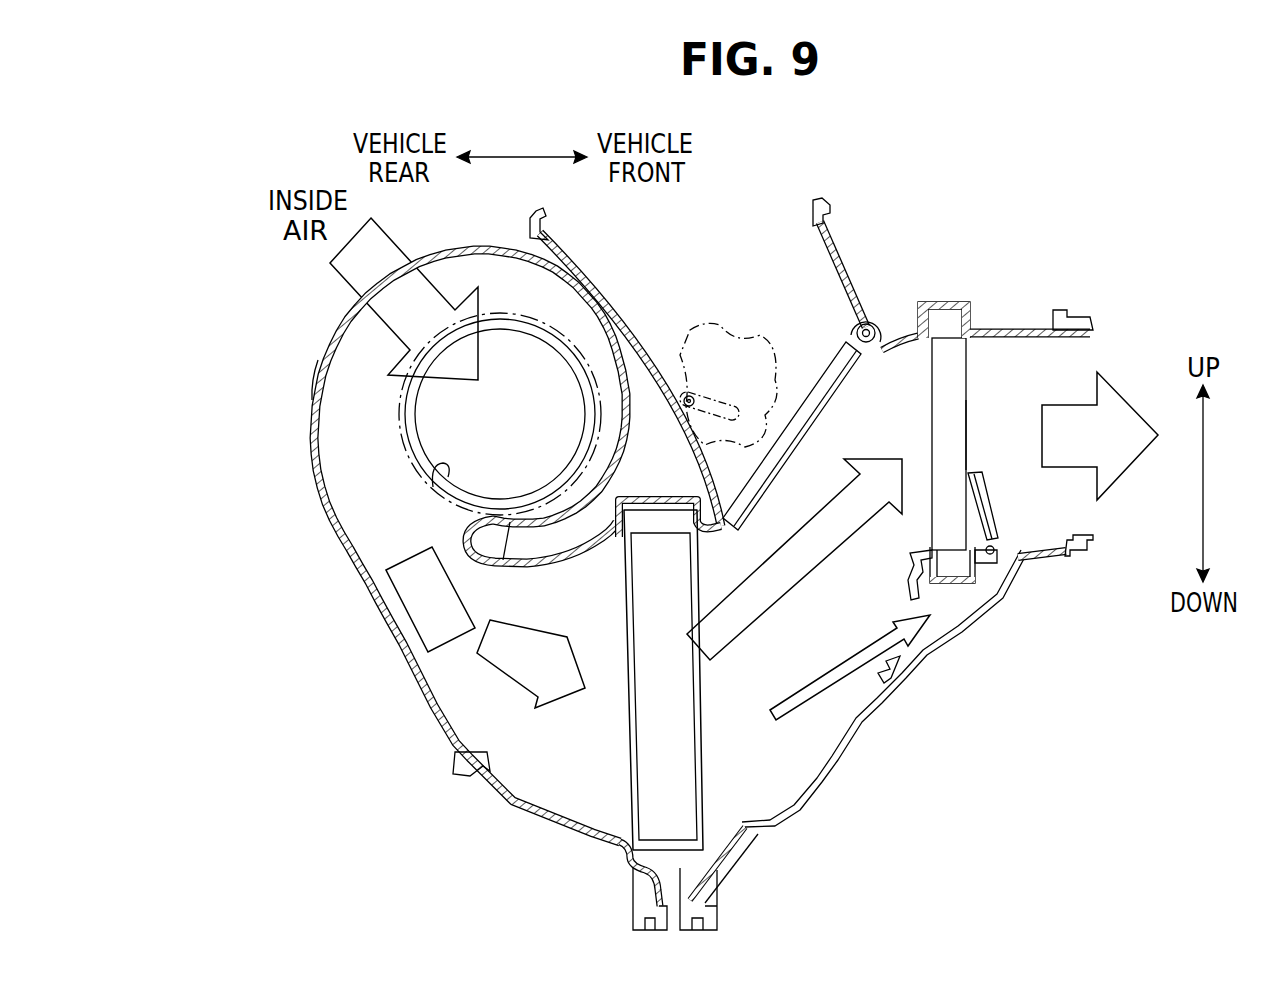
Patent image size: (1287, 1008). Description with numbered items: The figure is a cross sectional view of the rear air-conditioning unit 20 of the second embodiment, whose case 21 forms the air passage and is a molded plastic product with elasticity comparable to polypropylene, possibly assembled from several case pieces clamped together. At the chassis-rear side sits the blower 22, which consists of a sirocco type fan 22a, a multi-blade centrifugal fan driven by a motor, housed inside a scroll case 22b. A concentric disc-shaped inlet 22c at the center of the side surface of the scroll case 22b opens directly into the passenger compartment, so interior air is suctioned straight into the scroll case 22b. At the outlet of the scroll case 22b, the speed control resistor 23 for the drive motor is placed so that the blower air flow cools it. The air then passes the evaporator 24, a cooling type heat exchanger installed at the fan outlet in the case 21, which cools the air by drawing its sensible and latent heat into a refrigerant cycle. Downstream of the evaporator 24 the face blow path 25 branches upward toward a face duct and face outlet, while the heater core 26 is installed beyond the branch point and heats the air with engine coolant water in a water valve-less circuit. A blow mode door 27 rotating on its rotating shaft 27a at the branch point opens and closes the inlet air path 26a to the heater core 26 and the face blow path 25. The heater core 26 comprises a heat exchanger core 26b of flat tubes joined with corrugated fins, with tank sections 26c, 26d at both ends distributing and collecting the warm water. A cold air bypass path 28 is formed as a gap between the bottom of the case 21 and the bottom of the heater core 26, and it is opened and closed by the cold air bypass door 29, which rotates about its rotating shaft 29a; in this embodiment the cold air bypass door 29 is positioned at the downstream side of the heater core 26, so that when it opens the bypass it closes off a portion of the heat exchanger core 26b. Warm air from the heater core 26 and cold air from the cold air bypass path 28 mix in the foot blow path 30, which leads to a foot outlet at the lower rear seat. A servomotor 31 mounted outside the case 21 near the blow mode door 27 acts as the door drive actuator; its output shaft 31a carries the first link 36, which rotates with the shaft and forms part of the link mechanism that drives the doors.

The rear air-conditioning unit 20 is at (820, 790).
The case 21 is at (840, 762).
The blower 22 is at (342, 320).
The fan 22a is at (437, 466).
The scroll case 22b is at (315, 380).
The inlet 22c is at (400, 430).
The speed control resistor 23 is at (423, 607).
The evaporator 24 is at (650, 747).
The face blow path 25 is at (782, 275).
The heater core 26 is at (953, 395).
The inlet air path 26a is at (907, 380).
The heat exchanger core 26b is at (952, 435).
The tank section 26c is at (950, 325).
The tank section 26d is at (952, 563).
The blow mode door 27 is at (830, 380).
The rotating shaft 27a is at (858, 330).
The cold air bypass path 28 is at (972, 592).
The cold air bypass door 29 is at (993, 552).
The rotating shaft 29a is at (980, 510).
The foot blow path 30 is at (1072, 362).
The servomotor 31 is at (747, 363).
The output shaft 31a is at (686, 396).
The No. 1 link 36 is at (715, 362).